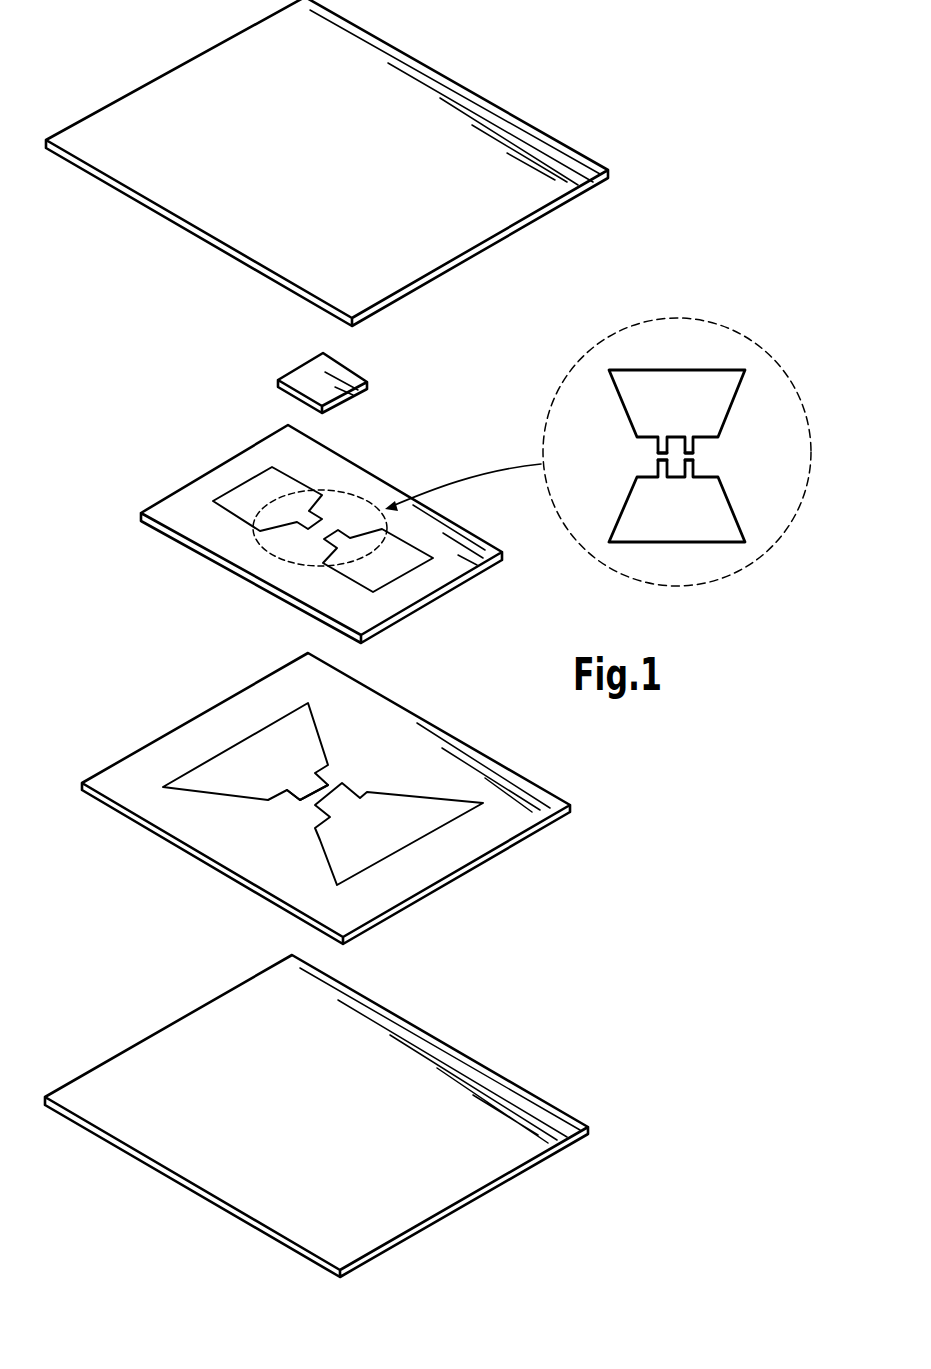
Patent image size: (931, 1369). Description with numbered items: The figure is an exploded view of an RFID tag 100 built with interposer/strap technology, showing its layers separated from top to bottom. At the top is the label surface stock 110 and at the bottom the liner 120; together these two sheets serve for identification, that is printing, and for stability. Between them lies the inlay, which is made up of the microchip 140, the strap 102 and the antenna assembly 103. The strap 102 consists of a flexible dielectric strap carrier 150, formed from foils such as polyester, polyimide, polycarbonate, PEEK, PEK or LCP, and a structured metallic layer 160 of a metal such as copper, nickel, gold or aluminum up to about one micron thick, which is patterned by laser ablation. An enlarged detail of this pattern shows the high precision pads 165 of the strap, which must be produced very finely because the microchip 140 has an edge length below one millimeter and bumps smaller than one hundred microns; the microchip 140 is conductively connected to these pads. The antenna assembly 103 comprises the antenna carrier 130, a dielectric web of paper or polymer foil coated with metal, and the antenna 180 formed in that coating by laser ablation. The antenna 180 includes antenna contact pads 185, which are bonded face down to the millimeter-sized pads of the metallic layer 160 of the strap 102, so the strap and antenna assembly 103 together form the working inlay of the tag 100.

The RFID tag 100 is at (691, 99).
The strap 102 is at (442, 468).
The antenna assembly 103 is at (307, 798).
The label surface stock 110 is at (132, 103).
The liner 120 is at (152, 1047).
The antenna carrier 130 is at (183, 737).
The microchip 140 is at (310, 375).
The strap carrier 150 is at (192, 492).
The structured metallic layer 160 is at (512, 443).
The high precision pads 165 is at (697, 443).
The antenna 180 is at (323, 794).
The antenna contact pads 185 is at (302, 790).